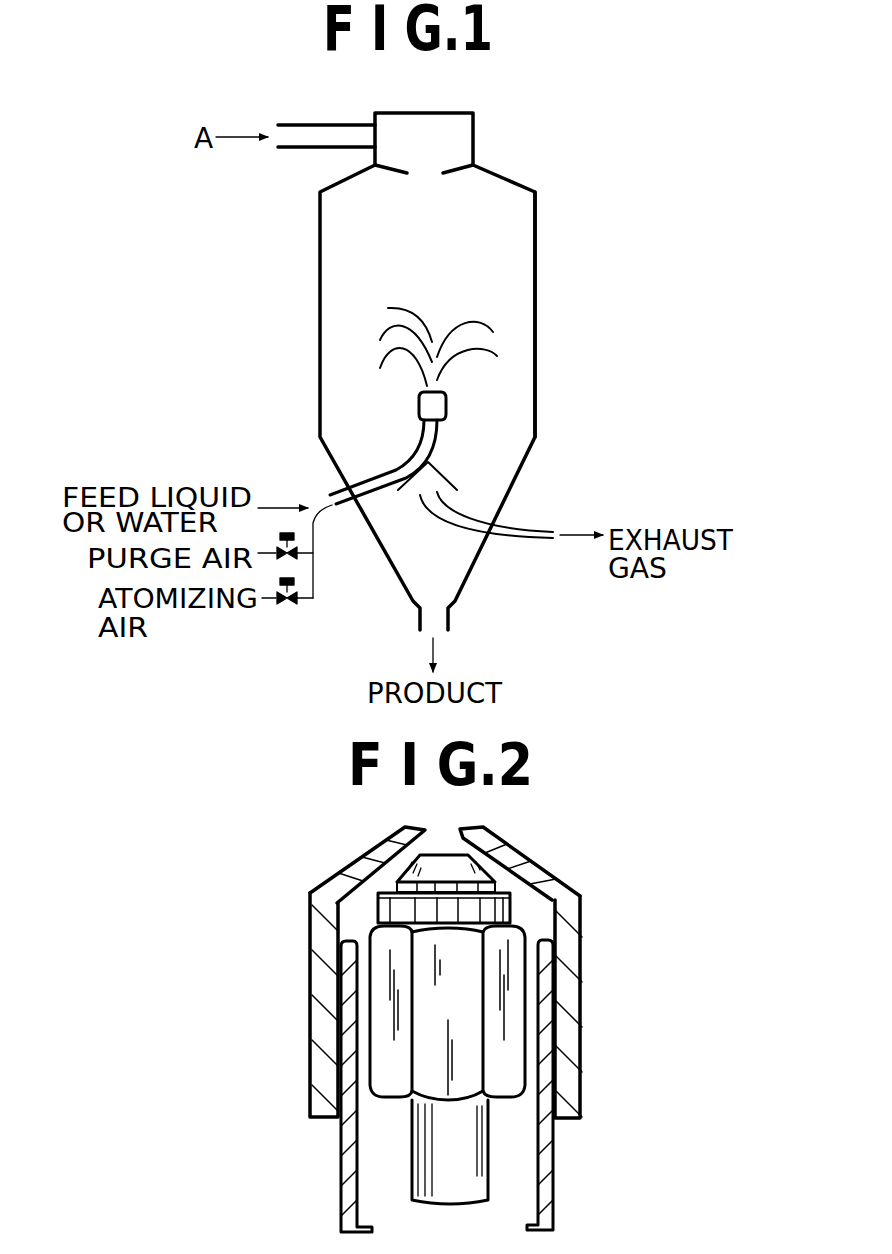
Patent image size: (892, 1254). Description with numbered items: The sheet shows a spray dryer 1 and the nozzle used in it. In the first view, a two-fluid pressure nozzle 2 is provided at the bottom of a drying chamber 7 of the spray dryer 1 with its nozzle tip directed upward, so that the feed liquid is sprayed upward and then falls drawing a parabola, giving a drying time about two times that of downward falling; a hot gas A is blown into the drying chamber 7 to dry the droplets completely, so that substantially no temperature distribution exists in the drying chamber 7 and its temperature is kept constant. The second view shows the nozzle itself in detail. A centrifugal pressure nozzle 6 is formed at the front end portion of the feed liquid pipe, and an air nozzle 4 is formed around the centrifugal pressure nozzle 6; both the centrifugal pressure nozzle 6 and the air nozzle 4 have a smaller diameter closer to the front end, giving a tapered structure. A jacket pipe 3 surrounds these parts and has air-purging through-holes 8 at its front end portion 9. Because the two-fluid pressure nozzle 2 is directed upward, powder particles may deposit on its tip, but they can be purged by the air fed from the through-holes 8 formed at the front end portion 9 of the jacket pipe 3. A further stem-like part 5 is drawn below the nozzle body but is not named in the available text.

In FIG. 1, the spray dryer 1 is at (513, 182).
In FIG. 1, the two-fluid pressure nozzle 2 is at (443, 398).
In FIG. 1, the drying chamber 7 is at (535, 314).
In FIG. 2, the jacket pipe 3 is at (347, 1132).
In FIG. 2, the air nozzle 4 is at (355, 922).
In FIG. 2, the nozzle stem 5 is at (420, 1178).
In FIG. 2, the centrifugal pressure nozzle 6 is at (390, 1042).
In FIG. 2, the air-purging through-holes 8 is at (387, 847).
In FIG. 2, the front end portion 9 is at (552, 883).